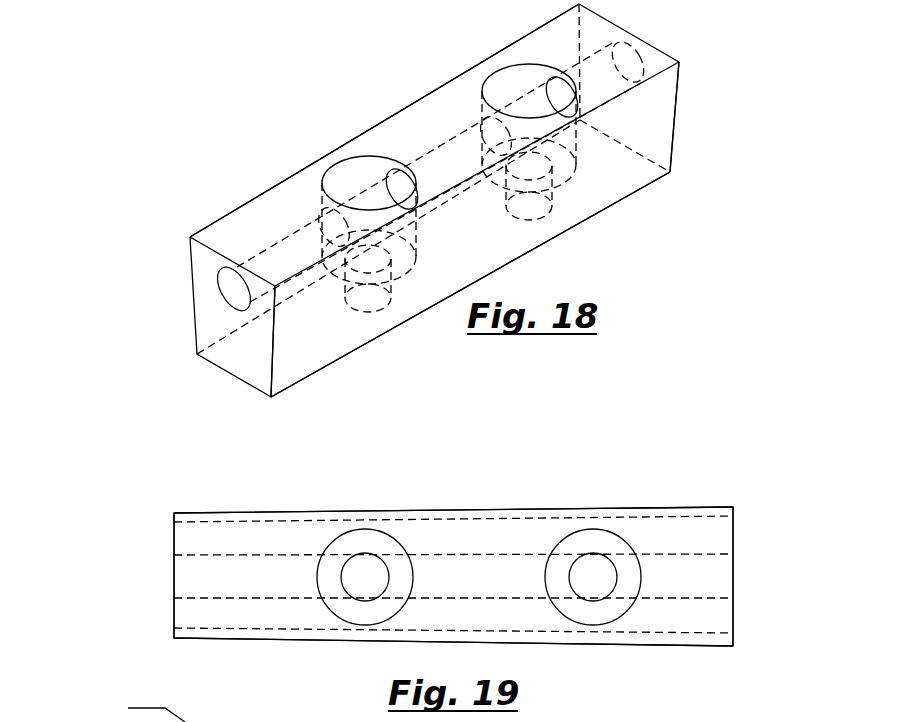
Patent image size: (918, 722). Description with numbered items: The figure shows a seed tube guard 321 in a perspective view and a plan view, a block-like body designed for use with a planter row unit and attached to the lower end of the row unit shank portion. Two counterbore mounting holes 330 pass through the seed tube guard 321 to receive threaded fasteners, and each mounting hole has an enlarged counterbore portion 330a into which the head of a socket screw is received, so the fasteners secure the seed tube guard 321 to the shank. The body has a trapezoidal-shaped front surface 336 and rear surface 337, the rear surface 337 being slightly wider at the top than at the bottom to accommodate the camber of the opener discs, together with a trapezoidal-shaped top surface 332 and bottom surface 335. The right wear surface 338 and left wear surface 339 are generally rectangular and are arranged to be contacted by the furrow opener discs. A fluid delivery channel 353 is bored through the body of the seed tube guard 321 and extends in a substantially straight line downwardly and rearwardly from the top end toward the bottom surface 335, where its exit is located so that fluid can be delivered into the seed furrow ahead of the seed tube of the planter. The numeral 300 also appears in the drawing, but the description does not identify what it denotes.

In FIG. 18, the seed tube guard 321 is at (389, 200).
In FIG. 19, the seed tube guard 321 is at (405, 566).
In FIG. 19, the counterbore mounting holes 330 is at (367, 567).
In FIG. 18, the counterbore portion 330a is at (340, 185).
In FIG. 19, the counterbore portion 330a is at (348, 543).
In FIG. 18, the left wear surface 339 is at (433, 108).
In FIG. 19, the left wear surface 339 is at (453, 508).
In FIG. 18, the top surface 332 is at (678, 95).
In FIG. 19, the top surface 332 is at (735, 545).
In FIG. 18, the rear surface 337 is at (237, 223).
In FIG. 19, the rear surface 337 is at (712, 615).
In FIG. 18, the right wear surface 338 is at (612, 182).
In FIG. 19, the right wear surface 338 is at (540, 643).
In FIG. 18, the front surface 336 is at (235, 357).
In FIG. 18, the bottom surface 335 is at (250, 372).
In FIG. 19, the bottom surface 335 is at (174, 538).
In FIG. 18, the fluid delivery channel 353 is at (230, 293).
In FIG. 18, the through hole 300 is at (365, 298).